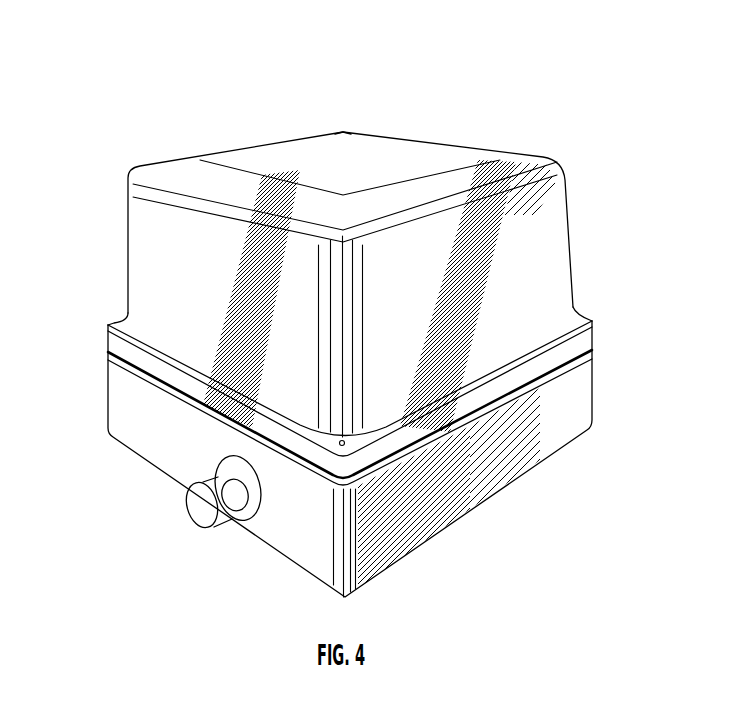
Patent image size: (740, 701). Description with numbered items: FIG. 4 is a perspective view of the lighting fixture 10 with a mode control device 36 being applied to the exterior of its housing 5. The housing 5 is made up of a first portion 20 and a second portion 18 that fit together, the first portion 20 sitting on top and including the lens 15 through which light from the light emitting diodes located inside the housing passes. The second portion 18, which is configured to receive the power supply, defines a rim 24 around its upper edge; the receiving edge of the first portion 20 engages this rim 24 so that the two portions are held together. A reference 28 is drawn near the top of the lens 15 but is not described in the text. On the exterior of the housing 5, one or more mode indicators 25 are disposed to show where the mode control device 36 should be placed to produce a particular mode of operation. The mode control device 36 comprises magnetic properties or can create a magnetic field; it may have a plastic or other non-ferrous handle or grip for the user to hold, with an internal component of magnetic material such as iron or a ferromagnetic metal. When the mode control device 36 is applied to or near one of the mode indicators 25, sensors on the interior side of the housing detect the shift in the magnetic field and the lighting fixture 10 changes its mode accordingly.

The housing 5 is at (247, 108).
The lighting fixture 10 is at (437, 106).
The lens 15 is at (223, 170).
The first portion 20 is at (153, 257).
The lens top ridge 28 is at (343, 153).
The rim 24 is at (108, 350).
The second portion 18 is at (127, 413).
The mode indicators 25 is at (175, 435).
The mode control device 36 is at (189, 503).